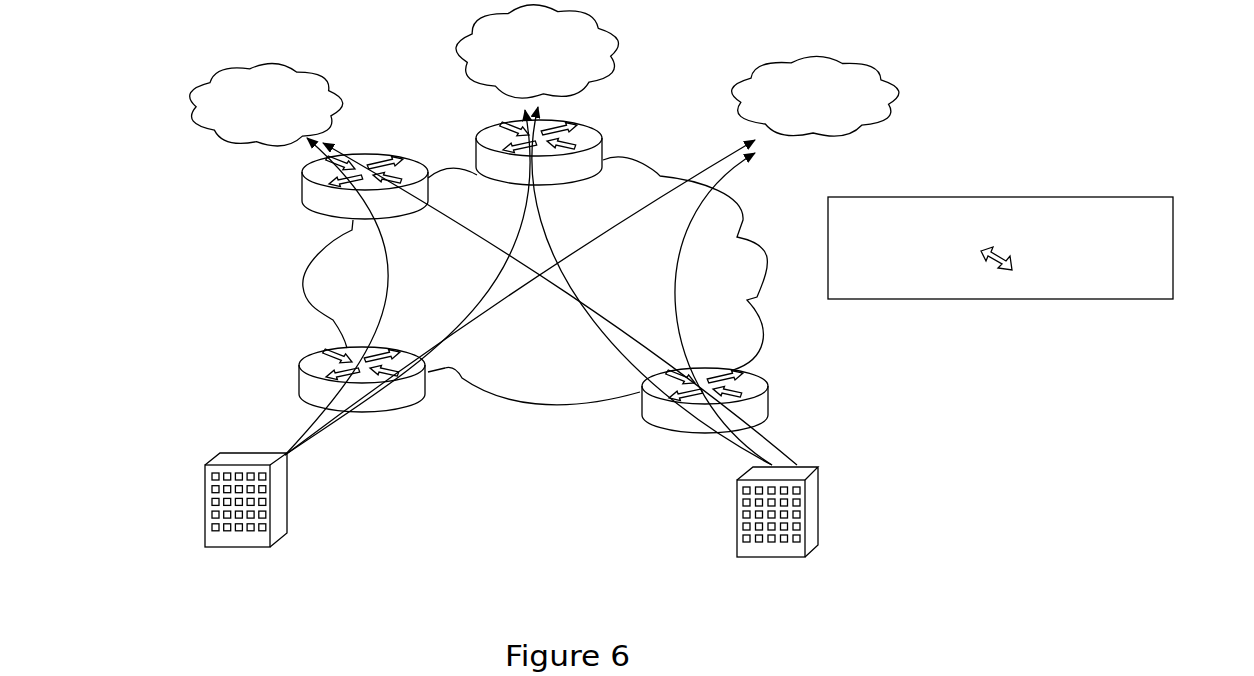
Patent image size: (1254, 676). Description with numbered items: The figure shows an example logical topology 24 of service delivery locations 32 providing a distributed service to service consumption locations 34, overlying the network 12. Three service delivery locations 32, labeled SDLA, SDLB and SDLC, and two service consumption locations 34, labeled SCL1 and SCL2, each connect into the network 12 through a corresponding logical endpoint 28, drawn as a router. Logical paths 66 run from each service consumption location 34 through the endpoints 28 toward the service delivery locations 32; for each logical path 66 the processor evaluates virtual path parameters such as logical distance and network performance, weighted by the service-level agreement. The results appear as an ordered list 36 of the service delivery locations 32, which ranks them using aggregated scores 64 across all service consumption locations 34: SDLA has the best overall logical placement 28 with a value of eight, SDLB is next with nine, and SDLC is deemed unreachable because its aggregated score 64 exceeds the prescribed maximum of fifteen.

The network 12 is at (307, 291).
The logical topology 24 is at (511, 358).
The logical endpoint 28 is at (307, 202).
The service delivery location 32 is at (252, 136).
The service consumption location 34 is at (277, 500).
The ordered list of service delivery locations 36 is at (1065, 197).
The aggregated score 64 is at (1013, 260).
The logical path 66 is at (500, 276).